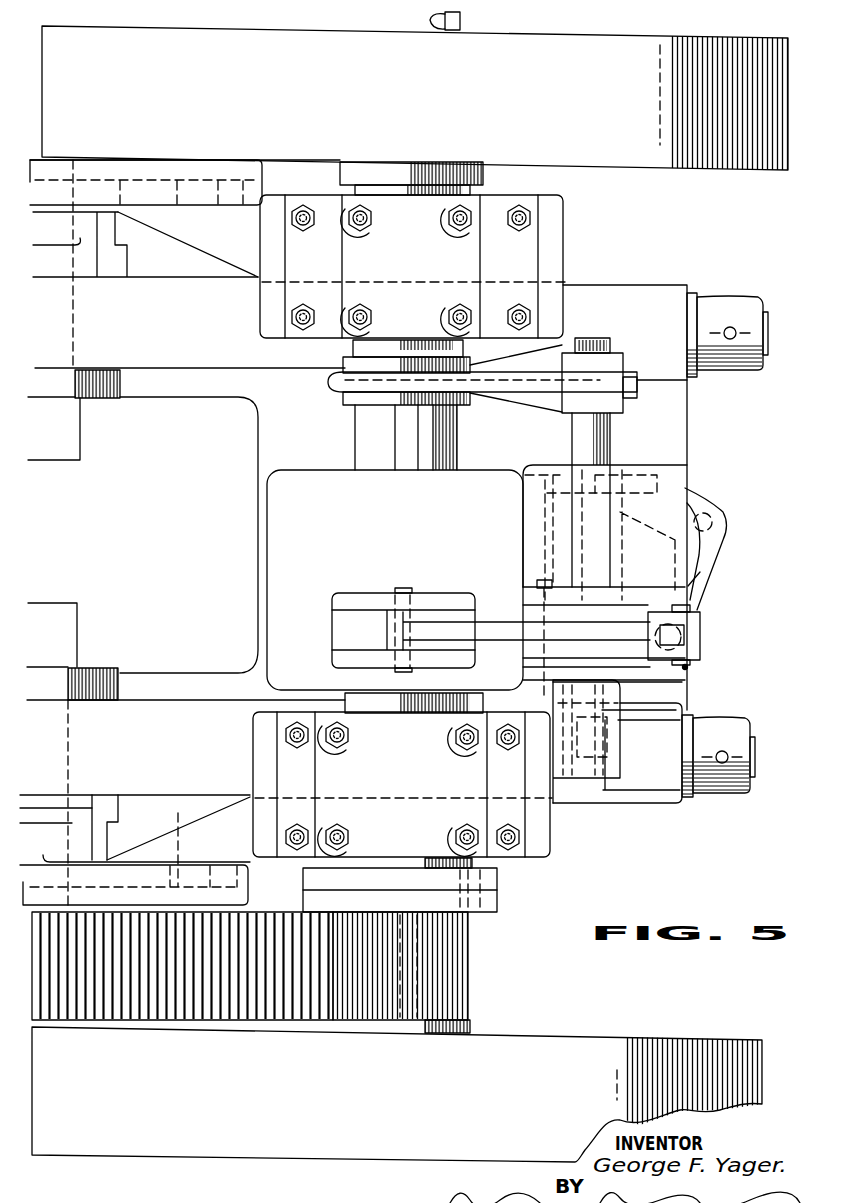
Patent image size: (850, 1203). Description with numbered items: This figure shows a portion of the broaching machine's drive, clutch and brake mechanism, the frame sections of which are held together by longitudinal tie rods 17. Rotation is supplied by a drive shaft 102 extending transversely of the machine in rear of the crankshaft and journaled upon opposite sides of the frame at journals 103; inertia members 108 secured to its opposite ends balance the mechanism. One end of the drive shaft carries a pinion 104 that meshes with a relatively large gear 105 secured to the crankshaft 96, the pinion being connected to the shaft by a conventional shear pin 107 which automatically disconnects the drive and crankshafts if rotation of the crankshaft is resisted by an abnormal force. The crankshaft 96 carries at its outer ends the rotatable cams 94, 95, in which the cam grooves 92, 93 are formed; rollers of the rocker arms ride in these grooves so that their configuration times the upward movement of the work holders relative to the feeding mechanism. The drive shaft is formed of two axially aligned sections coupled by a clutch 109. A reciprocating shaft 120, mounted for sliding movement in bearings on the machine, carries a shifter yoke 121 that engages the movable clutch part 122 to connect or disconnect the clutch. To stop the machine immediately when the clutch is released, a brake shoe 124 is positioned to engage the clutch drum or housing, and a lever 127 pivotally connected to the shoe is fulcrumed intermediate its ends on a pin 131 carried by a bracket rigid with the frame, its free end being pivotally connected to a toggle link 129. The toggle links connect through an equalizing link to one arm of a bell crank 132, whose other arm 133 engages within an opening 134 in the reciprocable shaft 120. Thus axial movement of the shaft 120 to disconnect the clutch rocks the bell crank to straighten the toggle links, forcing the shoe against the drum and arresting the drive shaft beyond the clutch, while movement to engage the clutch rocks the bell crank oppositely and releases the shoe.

The tie rods 17 is at (752, 318).
The cam groove 92 is at (200, 183).
The cam groove 93 is at (180, 828).
The rotatable cam 94 is at (250, 196).
The rotatable cam 95 is at (237, 880).
The crankshaft 96 is at (62, 449).
The drive shaft 102 is at (463, 21).
The drive shaft journals 103 is at (538, 255).
The pinion 104 is at (445, 975).
The gear 105 is at (267, 937).
The shear pin 107 is at (497, 902).
The inertia members 108 is at (737, 157).
The clutch 109 is at (458, 437).
The reciprocating shaft 120 is at (610, 447).
The shifter yoke 121 is at (627, 403).
The movable clutch part 122 is at (475, 373).
The brake shoe 124 is at (357, 615).
The lever 127 is at (498, 632).
The toggle link 129 is at (702, 637).
The pin 131 is at (543, 583).
The bell crank 132 is at (692, 575).
The bell crank arm 133 is at (688, 483).
The opening 134 is at (565, 482).